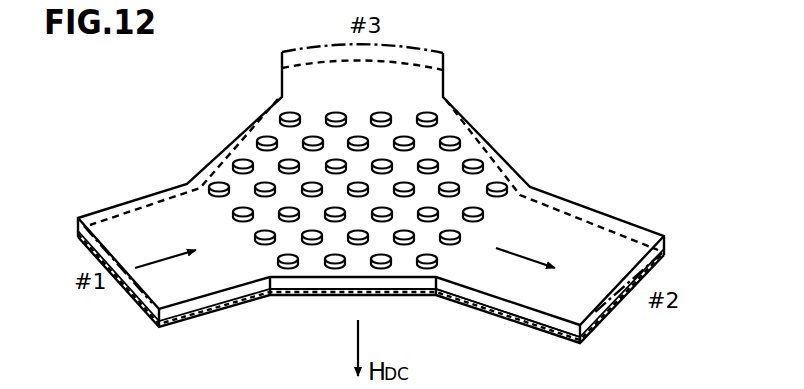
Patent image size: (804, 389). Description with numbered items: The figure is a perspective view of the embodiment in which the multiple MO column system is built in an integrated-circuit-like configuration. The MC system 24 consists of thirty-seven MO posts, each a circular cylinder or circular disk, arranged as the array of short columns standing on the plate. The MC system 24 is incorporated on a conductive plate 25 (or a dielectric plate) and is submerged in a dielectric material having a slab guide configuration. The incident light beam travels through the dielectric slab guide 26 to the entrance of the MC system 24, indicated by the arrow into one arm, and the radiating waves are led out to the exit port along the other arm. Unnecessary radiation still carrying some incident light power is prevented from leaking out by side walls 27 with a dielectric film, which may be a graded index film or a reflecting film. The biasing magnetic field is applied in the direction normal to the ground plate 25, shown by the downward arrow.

The MC system 24 is at (427, 187).
The conductive plate 25 is at (198, 315).
The dielectric slab guide 26 is at (233, 268).
The side walls 27 is at (418, 284).